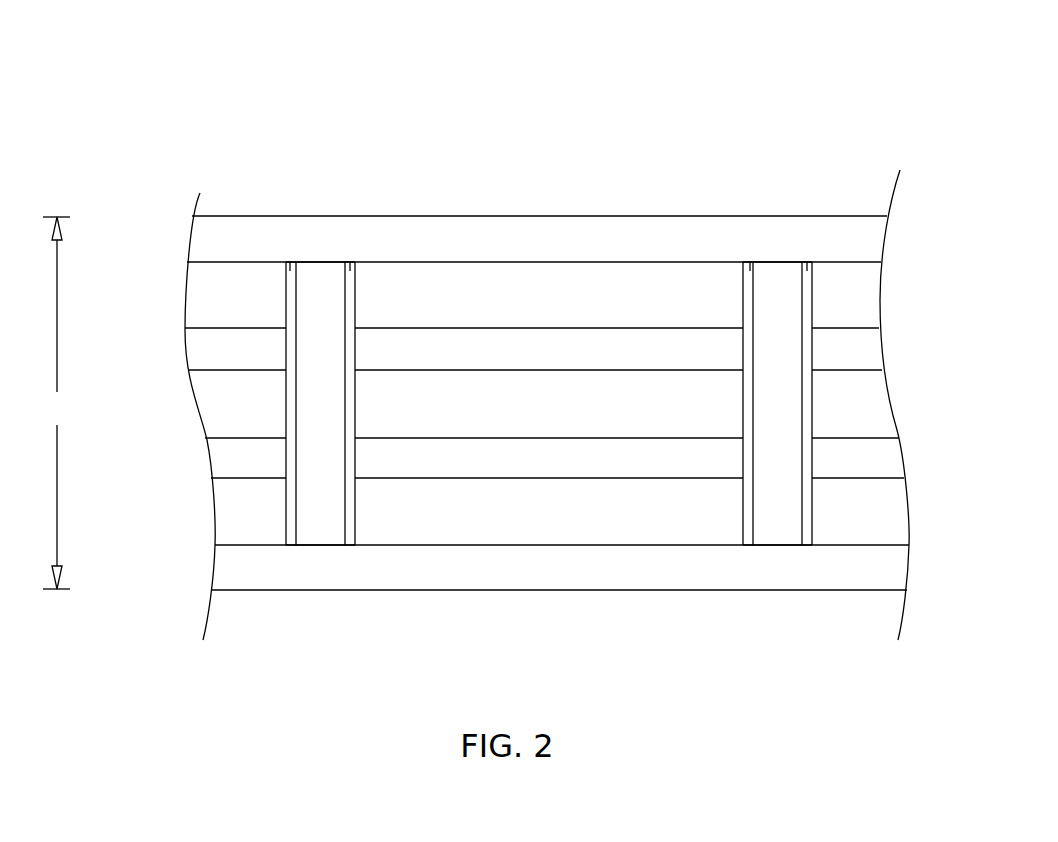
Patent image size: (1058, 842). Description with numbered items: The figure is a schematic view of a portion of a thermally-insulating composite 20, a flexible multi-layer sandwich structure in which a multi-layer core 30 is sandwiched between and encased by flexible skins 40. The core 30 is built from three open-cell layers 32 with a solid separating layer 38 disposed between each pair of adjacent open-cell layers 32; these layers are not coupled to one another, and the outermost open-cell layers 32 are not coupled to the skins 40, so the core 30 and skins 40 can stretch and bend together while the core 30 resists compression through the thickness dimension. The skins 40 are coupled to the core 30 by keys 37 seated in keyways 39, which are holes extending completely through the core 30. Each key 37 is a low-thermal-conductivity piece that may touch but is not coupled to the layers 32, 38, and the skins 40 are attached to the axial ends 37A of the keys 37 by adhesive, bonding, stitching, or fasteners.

The thermally-insulating composite 20 is at (202, 76).
The multi-layer core 30 is at (138, 262).
The open-cell layer 32 is at (663, 288).
The key 37 is at (332, 523).
The axial end of key 37A is at (315, 261).
The separating layer 38 is at (692, 350).
The keyway 39 is at (290, 262).
The skin layer 40 is at (475, 240).